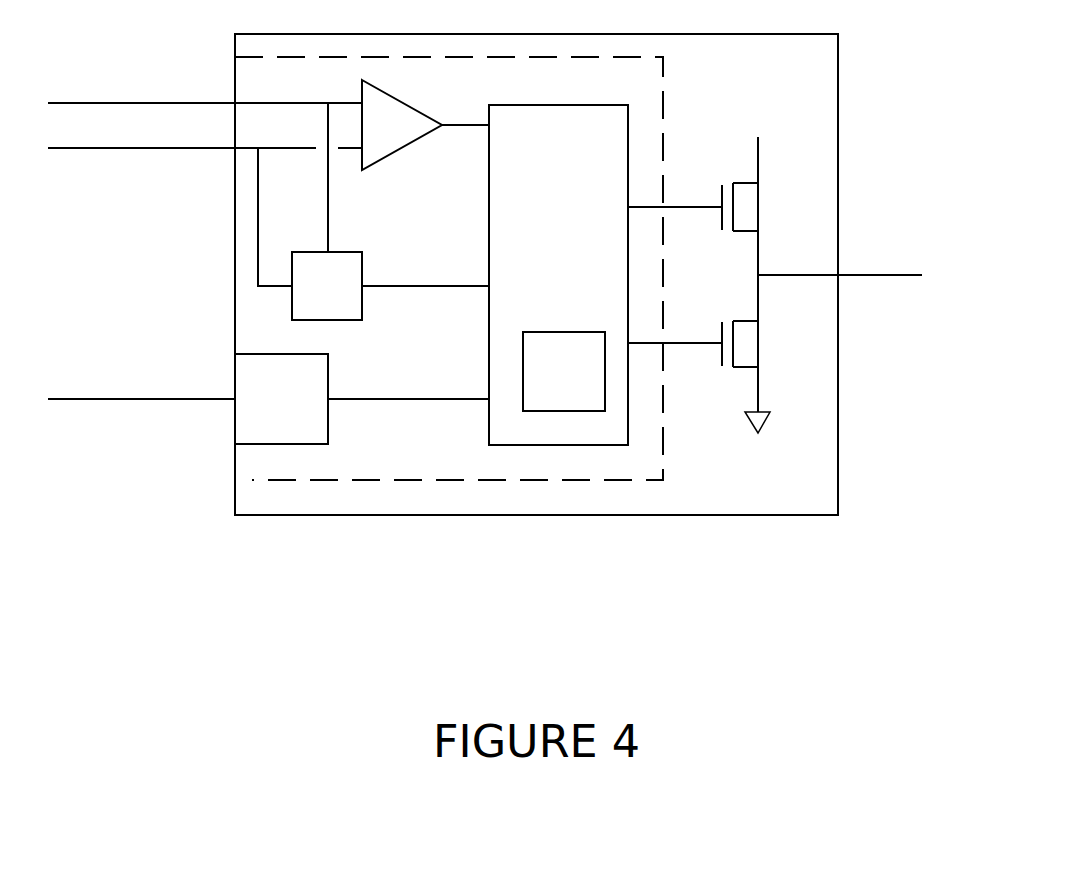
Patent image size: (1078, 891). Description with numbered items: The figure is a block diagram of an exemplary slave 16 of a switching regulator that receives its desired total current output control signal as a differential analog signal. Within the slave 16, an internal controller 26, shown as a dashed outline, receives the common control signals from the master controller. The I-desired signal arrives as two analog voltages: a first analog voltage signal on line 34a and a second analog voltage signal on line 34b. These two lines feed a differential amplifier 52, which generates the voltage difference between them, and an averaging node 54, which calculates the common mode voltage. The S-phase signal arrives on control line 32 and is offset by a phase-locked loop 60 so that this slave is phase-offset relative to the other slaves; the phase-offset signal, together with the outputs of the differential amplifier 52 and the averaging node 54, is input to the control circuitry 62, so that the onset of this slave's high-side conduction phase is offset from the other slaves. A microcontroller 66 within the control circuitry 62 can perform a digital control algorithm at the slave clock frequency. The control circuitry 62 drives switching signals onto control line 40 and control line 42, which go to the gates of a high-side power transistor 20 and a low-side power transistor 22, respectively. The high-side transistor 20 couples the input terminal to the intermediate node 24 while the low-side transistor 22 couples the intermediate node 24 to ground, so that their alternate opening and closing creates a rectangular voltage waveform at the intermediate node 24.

The slave 16 is at (367, 515).
The internal controller 26 is at (628, 480).
The line 34a is at (128, 102).
The line 34b is at (158, 150).
The control line 32 is at (147, 400).
The differential amplifier 52 is at (425, 125).
The averaging node 54 is at (390, 286).
The phase-locked loop 60 is at (362, 399).
The control circuitry 62 is at (558, 275).
The microcontroller 66 is at (564, 371).
The control line 40 is at (686, 203).
The control line 42 is at (682, 342).
The high-side power transistor 20 is at (720, 220).
The low-side power transistor 22 is at (720, 355).
The intermediate node 24 is at (760, 272).